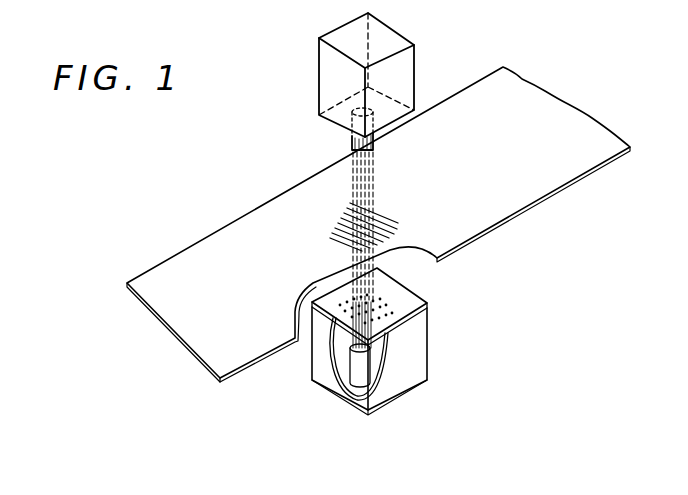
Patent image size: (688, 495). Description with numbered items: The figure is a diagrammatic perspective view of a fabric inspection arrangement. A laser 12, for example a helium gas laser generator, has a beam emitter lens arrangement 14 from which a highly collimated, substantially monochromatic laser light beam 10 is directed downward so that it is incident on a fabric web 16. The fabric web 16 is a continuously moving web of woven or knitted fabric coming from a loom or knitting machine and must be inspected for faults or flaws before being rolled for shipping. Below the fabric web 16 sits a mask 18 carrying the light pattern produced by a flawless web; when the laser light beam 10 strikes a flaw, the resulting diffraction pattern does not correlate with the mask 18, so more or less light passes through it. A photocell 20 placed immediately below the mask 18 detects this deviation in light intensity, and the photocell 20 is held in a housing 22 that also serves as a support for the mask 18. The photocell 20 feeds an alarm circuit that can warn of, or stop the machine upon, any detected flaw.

The laser light beam 10 is at (368, 172).
The laser 12 is at (415, 67).
The beam emitter lens arrangement 14 is at (352, 145).
The fabric web 16 is at (502, 220).
The mask 18 is at (407, 302).
The photocell 20 is at (357, 375).
The housing 22 is at (427, 347).